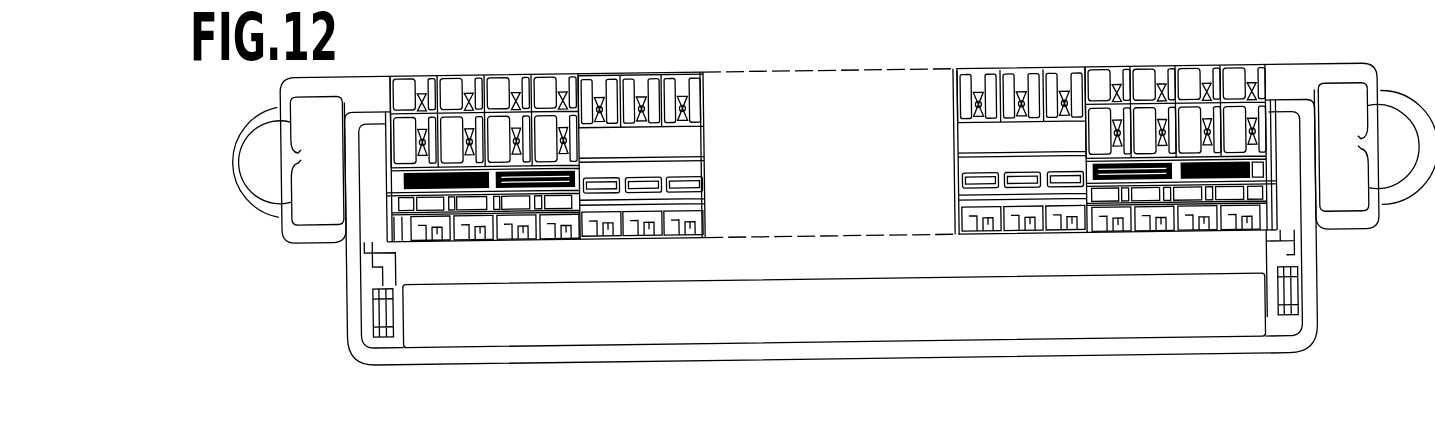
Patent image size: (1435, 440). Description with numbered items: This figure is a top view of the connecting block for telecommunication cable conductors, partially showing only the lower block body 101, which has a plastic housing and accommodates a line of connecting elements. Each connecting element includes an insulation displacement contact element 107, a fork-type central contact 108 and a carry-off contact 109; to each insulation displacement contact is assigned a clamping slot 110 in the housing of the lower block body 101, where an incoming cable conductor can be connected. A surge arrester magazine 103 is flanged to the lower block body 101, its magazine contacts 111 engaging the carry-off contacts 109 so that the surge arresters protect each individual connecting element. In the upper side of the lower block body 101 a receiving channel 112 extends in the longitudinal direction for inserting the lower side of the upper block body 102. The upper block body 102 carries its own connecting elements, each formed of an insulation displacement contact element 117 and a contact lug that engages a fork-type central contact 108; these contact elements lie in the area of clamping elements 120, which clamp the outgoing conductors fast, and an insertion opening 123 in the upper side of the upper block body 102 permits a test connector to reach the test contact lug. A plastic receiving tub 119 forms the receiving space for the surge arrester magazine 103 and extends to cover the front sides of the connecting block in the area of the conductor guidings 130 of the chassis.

The lower block body 101 is at (670, 70).
The upper block body 102 is at (486, 148).
The surge arrester magazine 103 is at (430, 317).
The insulation displacement contact element 107 is at (640, 72).
The fork-type central contact 108 is at (687, 177).
The carry-off contact 109 is at (648, 232).
The clamping slot 110 is at (641, 84).
The magazine contact 111 is at (680, 232).
The receiving channel 112 is at (697, 134).
The insulation displacement contact element 117 is at (438, 146).
The receiving tub 119 is at (1268, 347).
The clamping element 120 is at (430, 150).
The insertion opening 123 is at (357, 180).
The conductor guiding 130 is at (1354, 73).